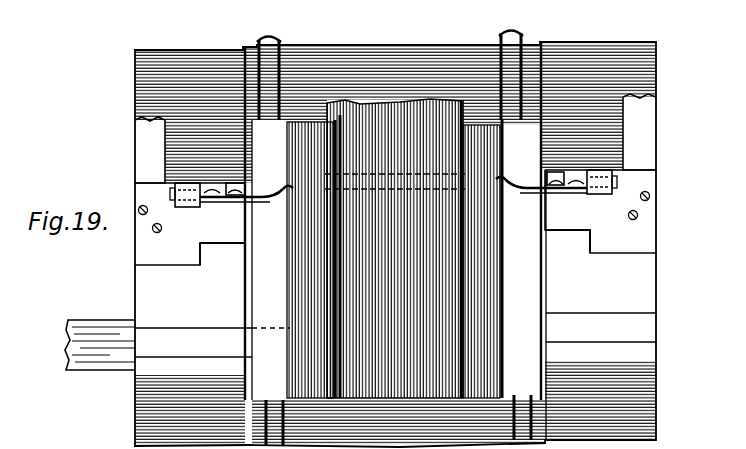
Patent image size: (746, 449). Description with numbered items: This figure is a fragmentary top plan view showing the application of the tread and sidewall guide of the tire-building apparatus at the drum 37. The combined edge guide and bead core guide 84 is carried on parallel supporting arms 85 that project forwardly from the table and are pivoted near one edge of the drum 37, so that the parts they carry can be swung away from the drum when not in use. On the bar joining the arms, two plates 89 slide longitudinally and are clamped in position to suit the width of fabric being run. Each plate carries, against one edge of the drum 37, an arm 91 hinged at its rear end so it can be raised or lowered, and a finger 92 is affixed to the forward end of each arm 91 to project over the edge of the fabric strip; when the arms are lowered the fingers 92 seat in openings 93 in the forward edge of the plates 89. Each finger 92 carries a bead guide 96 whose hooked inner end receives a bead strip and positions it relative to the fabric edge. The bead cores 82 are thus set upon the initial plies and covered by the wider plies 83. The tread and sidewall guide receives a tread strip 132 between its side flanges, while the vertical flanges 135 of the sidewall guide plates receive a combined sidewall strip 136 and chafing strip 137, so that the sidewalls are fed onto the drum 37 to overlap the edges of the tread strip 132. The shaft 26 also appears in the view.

The shaft 26 is at (100, 335).
The drum 37 is at (657, 68).
The bead cores 82 is at (268, 35).
The wider plies 83 is at (455, 46).
The combined edge guide and bead core guide 84 is at (657, 176).
The supporting arms 85 is at (675, 124).
The plates 89 is at (650, 222).
The arm 91 is at (217, 183).
The finger 92 is at (198, 212).
The openings 93 is at (606, 236).
The bead guide 96 is at (513, 176).
The tread strip 132 is at (393, 97).
The vertical flanges 135 is at (566, 297).
The sidewall strip 136 is at (300, 340).
The chafing strip 137 is at (250, 296).